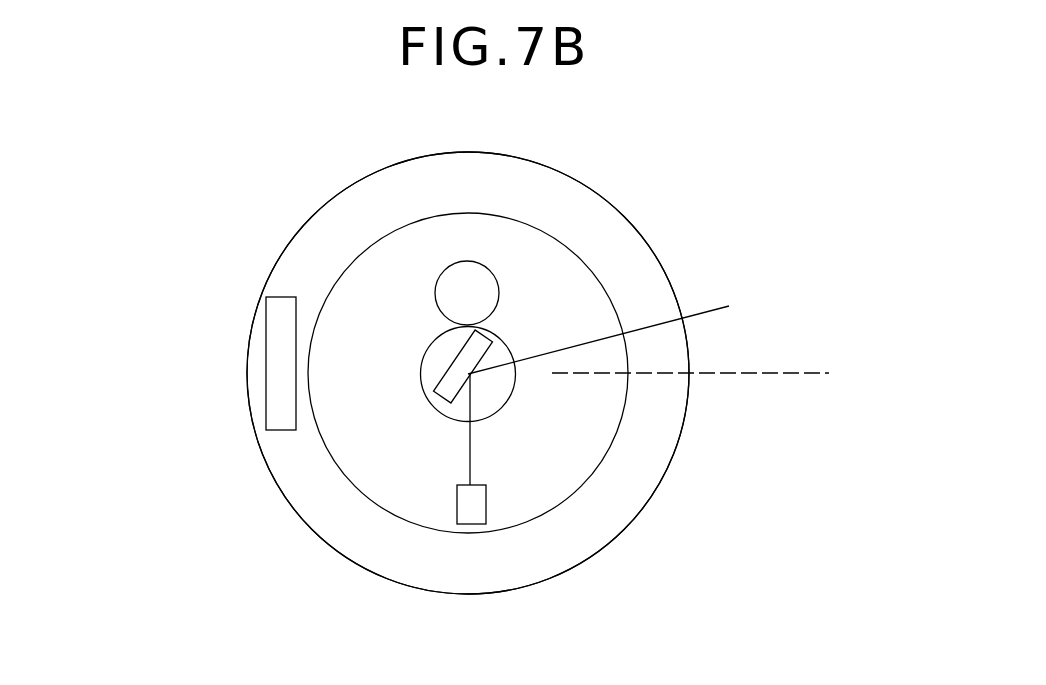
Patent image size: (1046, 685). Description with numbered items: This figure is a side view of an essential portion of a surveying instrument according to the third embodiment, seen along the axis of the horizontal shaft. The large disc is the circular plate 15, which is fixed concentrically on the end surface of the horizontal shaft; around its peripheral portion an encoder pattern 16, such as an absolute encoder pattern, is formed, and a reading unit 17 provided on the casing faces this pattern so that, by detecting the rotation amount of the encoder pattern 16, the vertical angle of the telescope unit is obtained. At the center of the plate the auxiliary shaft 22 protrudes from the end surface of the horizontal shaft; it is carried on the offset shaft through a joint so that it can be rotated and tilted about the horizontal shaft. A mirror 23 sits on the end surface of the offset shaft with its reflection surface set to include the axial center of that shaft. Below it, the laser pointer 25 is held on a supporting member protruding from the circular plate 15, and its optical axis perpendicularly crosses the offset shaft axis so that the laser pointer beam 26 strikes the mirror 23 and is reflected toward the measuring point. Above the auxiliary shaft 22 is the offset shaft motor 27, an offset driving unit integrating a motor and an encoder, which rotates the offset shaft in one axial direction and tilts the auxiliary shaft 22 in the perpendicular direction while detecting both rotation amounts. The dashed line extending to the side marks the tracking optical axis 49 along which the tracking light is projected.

The circular plate 15 is at (644, 240).
The encoder pattern 16 is at (560, 172).
The reading unit 17 is at (266, 318).
The auxiliary shaft 22 is at (498, 337).
The mirror 23 is at (448, 360).
The laser pointer 25 is at (457, 490).
The laser pointer beam 26 is at (707, 312).
The offset shaft motor 27 is at (467, 261).
The tracking optical axis 49 is at (773, 373).